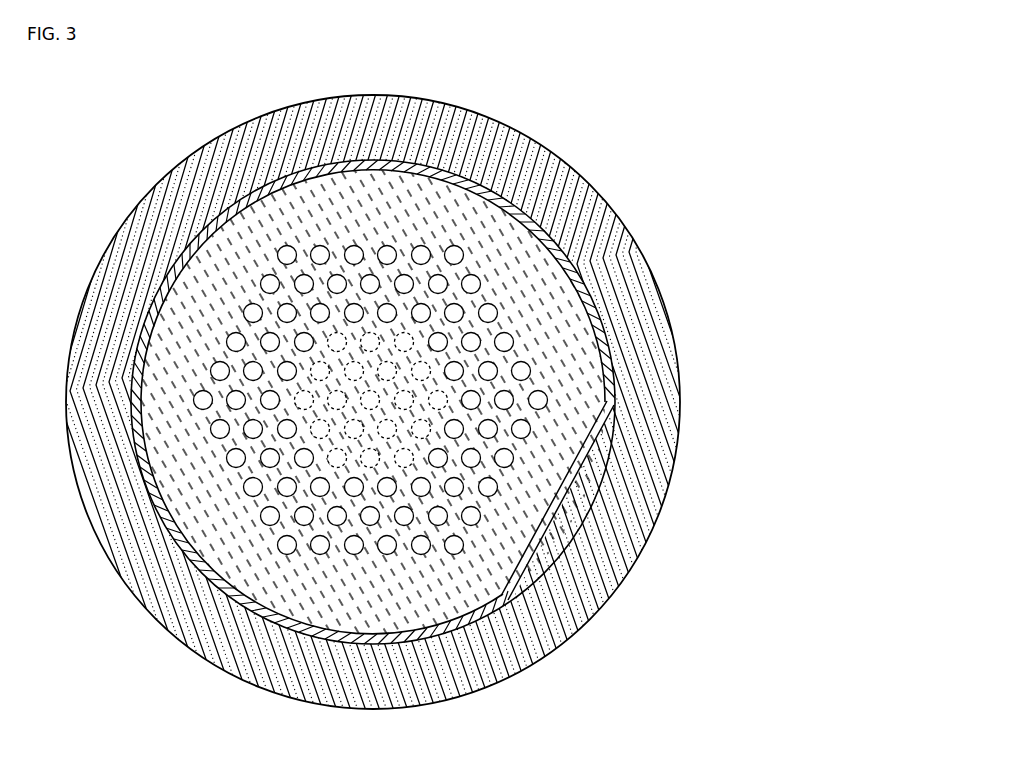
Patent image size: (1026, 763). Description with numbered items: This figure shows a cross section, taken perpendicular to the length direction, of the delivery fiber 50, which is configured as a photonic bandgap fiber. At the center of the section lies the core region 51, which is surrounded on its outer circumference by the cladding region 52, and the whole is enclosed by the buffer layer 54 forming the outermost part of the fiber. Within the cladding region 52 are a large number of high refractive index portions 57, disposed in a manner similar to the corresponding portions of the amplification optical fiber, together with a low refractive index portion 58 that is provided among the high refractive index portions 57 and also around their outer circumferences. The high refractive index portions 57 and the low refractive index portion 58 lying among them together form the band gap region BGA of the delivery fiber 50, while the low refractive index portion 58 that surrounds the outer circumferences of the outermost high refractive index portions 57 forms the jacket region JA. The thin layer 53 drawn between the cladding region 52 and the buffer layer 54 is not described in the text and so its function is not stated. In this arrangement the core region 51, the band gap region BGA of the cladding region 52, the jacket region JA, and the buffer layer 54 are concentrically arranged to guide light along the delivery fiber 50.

The delivery fiber 50 is at (450, 386).
The core region 51 is at (436, 361).
The cladding region 52 is at (408, 397).
The inner layer 53 is at (595, 486).
The buffer layer 54 is at (645, 432).
The high refractive index portions 57 is at (478, 283).
The low refractive index portion 58 is at (463, 270).
The jacket region JA is at (365, 198).
The band gap region BGA is at (439, 248).